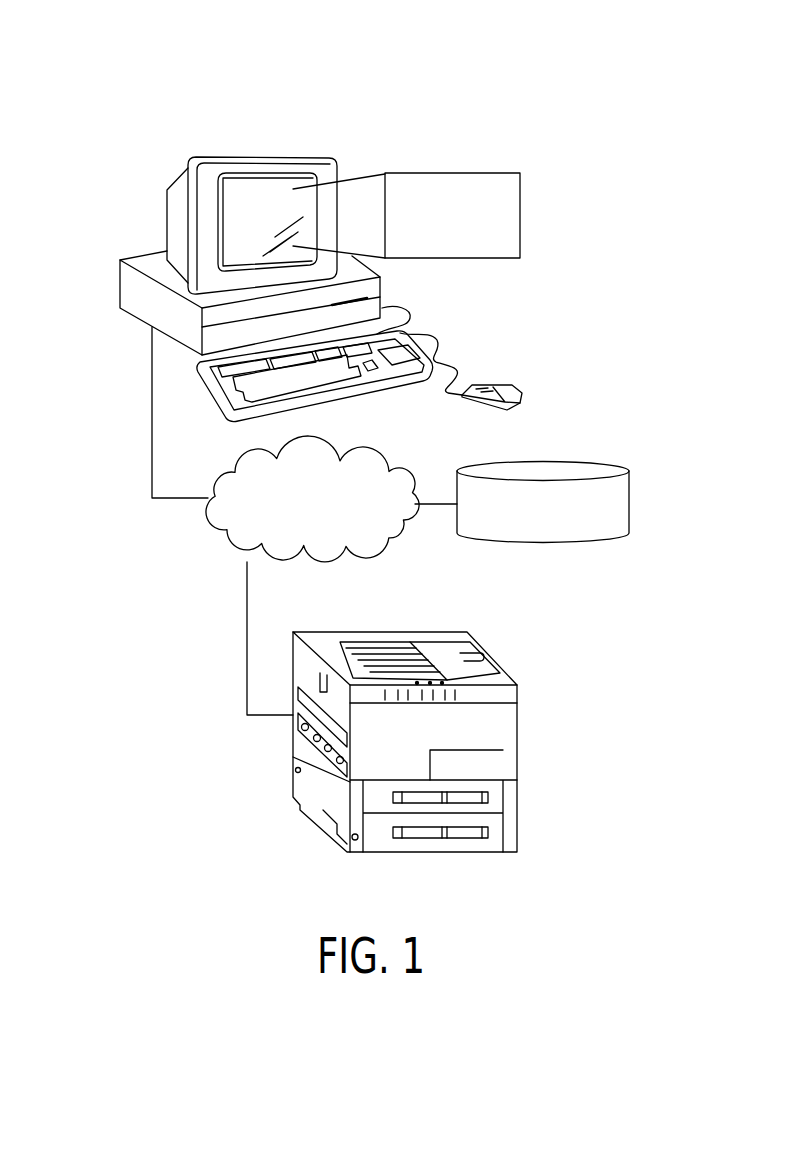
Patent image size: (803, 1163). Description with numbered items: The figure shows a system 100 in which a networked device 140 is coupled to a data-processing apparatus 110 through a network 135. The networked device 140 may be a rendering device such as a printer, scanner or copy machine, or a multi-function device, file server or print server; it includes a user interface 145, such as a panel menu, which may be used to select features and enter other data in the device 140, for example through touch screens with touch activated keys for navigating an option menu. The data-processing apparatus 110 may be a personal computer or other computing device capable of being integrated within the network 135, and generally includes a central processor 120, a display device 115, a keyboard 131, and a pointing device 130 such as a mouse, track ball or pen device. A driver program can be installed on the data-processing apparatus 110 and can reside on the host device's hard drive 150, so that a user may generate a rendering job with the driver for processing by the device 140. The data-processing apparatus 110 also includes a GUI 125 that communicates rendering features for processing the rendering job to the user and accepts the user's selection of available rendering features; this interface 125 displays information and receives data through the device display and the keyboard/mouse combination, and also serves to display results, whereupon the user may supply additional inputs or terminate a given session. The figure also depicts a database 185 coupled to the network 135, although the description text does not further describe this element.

The system 100 is at (466, 70).
The data-processing apparatus 110 is at (287, 157).
The display device 115 is at (257, 175).
The central processor 120 is at (128, 314).
The GUI 125 is at (468, 173).
The pointing device 130 is at (460, 341).
The keyboard 131 is at (212, 402).
The network 135 is at (317, 438).
The networked device 140 is at (433, 632).
The user interface 145 is at (447, 682).
The hard drive 150 is at (119, 272).
The database 185 is at (590, 463).